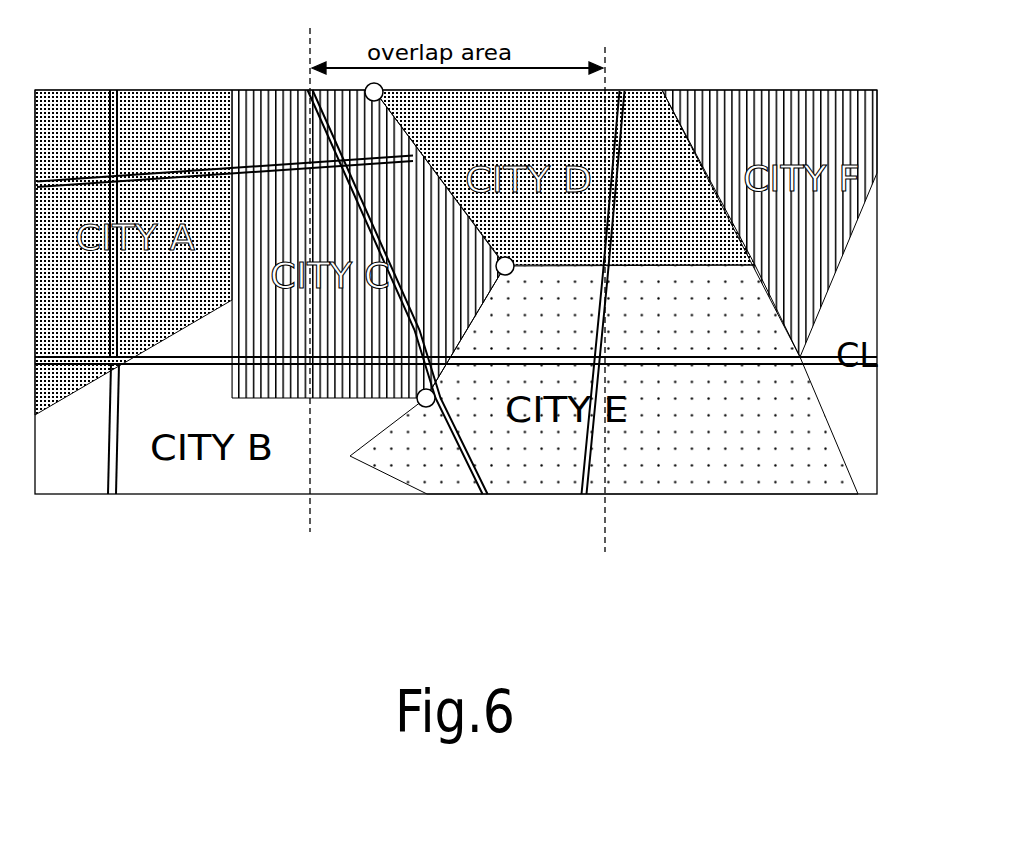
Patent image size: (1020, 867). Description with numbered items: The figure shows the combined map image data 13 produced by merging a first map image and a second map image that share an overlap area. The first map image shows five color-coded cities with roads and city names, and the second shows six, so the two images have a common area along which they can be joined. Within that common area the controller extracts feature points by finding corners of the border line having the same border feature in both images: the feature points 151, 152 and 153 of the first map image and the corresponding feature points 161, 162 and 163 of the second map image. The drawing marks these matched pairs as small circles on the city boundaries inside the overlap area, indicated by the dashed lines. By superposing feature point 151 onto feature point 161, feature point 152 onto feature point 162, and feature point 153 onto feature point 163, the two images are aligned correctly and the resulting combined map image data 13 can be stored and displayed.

The combined map image data 13 is at (202, 535).
The feature point 151 is at (257, 62).
The feature point 161 is at (366, 90).
The feature point 152 is at (532, 412).
The feature point 162 is at (505, 275).
The feature point 153 is at (381, 497).
The feature point 163 is at (426, 398).